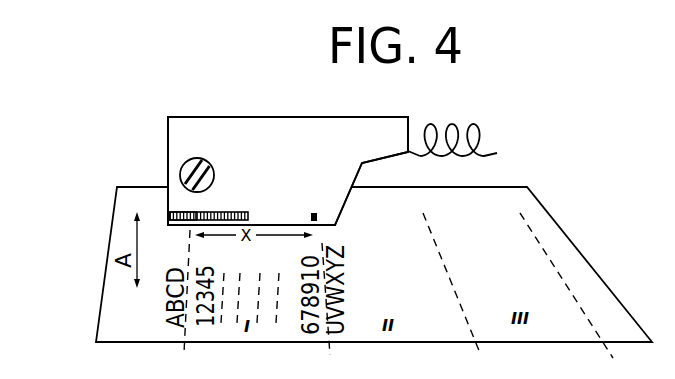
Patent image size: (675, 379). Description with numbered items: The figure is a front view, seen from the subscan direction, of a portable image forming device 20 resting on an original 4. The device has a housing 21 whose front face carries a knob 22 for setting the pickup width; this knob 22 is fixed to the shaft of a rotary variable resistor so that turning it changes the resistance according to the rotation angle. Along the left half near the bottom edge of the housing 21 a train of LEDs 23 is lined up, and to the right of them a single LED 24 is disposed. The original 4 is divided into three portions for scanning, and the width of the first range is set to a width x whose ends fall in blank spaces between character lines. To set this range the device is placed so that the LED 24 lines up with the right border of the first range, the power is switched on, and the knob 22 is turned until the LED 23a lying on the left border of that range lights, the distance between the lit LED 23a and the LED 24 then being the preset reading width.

The original 4 is at (595, 273).
The portable image forming device 20 is at (233, 105).
The housing 21 is at (332, 122).
The knob for setting pickup width 22 is at (183, 168).
The LEDs 23 is at (227, 205).
The LED 23a is at (193, 221).
The LED 24 is at (313, 213).